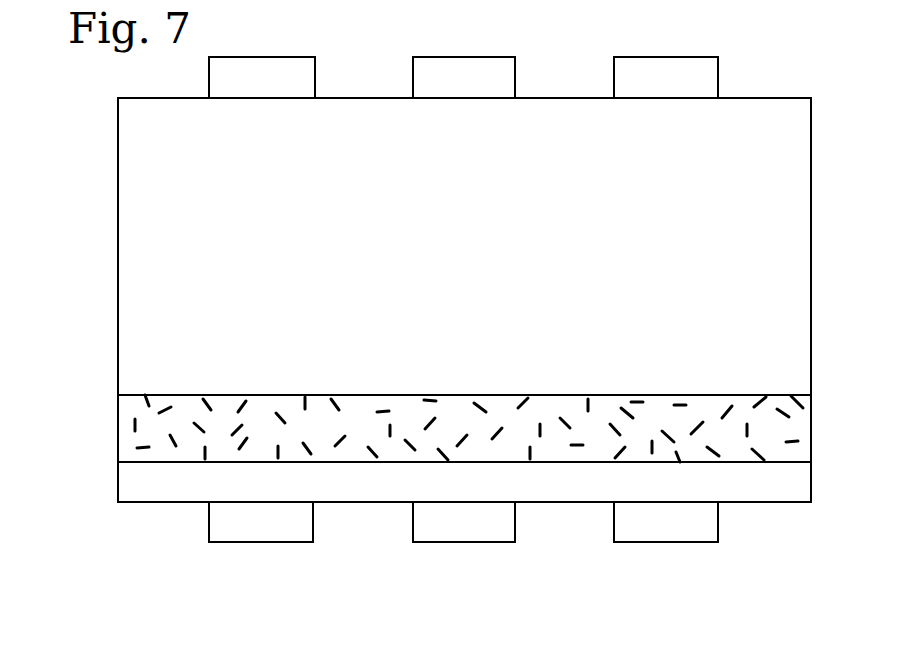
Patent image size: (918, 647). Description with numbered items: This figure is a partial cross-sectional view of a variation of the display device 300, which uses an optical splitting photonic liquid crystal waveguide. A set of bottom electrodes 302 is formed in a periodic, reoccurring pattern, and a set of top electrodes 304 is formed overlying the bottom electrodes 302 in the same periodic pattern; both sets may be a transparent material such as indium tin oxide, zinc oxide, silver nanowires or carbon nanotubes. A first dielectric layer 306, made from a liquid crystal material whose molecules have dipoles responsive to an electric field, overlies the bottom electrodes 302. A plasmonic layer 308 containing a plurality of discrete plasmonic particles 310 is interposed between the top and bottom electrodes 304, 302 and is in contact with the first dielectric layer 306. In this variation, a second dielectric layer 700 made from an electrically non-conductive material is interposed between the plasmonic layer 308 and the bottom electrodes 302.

The display device 300 is at (848, 50).
The bottom electrodes 302 is at (640, 542).
The top electrodes 304 is at (636, 57).
The first dielectric layer 306 is at (486, 258).
The plasmonic layer 308 is at (556, 395).
The plasmonic particles 310 is at (425, 418).
The second dielectric layer 700 is at (368, 503).